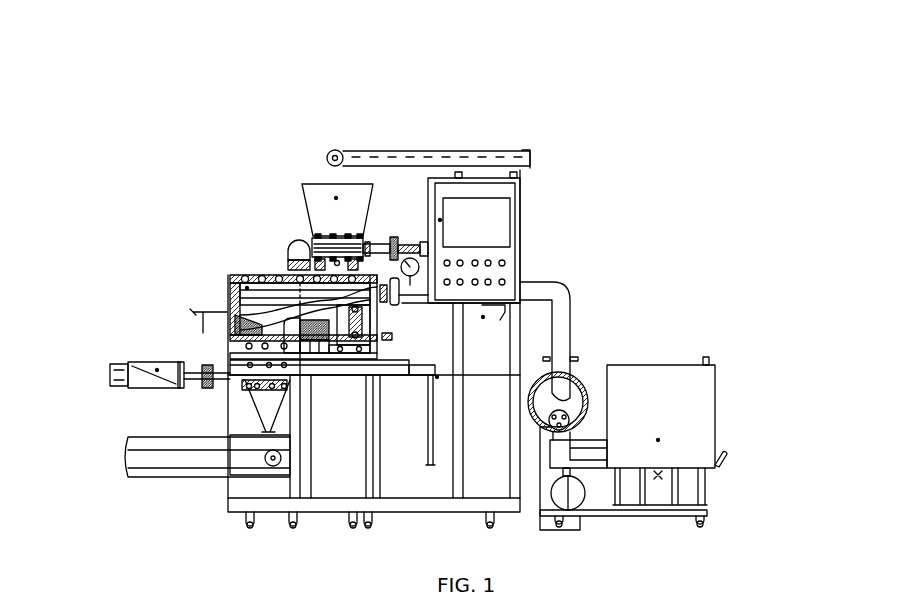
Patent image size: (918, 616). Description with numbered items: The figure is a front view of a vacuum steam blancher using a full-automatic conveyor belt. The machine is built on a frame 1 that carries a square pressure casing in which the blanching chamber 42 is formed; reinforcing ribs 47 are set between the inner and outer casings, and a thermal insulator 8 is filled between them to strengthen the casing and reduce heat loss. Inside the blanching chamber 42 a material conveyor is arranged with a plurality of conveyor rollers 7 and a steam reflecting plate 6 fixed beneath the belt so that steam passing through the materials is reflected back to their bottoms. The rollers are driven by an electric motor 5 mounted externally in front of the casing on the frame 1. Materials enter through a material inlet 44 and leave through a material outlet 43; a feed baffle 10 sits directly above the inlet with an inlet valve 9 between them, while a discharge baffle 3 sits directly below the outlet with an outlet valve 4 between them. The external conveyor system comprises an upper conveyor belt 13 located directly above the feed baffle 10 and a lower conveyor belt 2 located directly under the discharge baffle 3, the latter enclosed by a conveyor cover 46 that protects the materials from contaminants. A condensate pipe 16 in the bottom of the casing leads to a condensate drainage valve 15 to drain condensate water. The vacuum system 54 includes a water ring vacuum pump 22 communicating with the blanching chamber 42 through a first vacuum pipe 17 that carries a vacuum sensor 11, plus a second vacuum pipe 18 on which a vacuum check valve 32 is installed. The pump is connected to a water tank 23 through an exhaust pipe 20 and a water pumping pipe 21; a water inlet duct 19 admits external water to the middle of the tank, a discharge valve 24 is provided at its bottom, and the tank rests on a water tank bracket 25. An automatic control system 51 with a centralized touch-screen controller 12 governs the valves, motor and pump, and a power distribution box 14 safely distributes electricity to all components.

The frame 1 is at (247, 505).
The lower conveyor belt 2 is at (272, 458).
The discharge baffle 3 is at (263, 433).
The outlet valve 4 is at (157, 370).
The electric motor 5 is at (247, 327).
The steam reflecting plate 6 is at (236, 313).
The conveyor rollers 7 is at (228, 306).
The thermal insulator 8 is at (318, 319).
The inlet valve 9 is at (343, 237).
The feed baffle 10 is at (336, 198).
The vacuum sensor 11 is at (388, 238).
The centralized touch-screen controller 12 is at (440, 220).
The upper conveyor belt 13 is at (487, 163).
The power distribution box 14 is at (527, 172).
The condensate drainage valve 15 is at (483, 317).
The condensate pipe 16 is at (437, 377).
The first vacuum pipe 17 is at (558, 322).
The second vacuum pipe 18 is at (606, 427).
The water inlet duct 19 is at (585, 435).
The exhaust pipe 20 is at (587, 462).
The water pumping pipe 21 is at (562, 481).
The water ring vacuum pump 22 is at (706, 365).
The water tank 23 is at (658, 440).
The discharge valve 24 is at (658, 475).
The water tank bracket 25 is at (707, 478).
The vacuum check valve 32 is at (557, 450).
The blanching chamber 42 is at (247, 288).
The material outlet 43 is at (230, 348).
The material inlet 44 is at (306, 247).
The conveyor cover 46 is at (123, 470).
The reinforcing ribs 47 is at (289, 275).
The automatic control system 51 is at (449, 183).
The vacuum system 54 is at (577, 380).